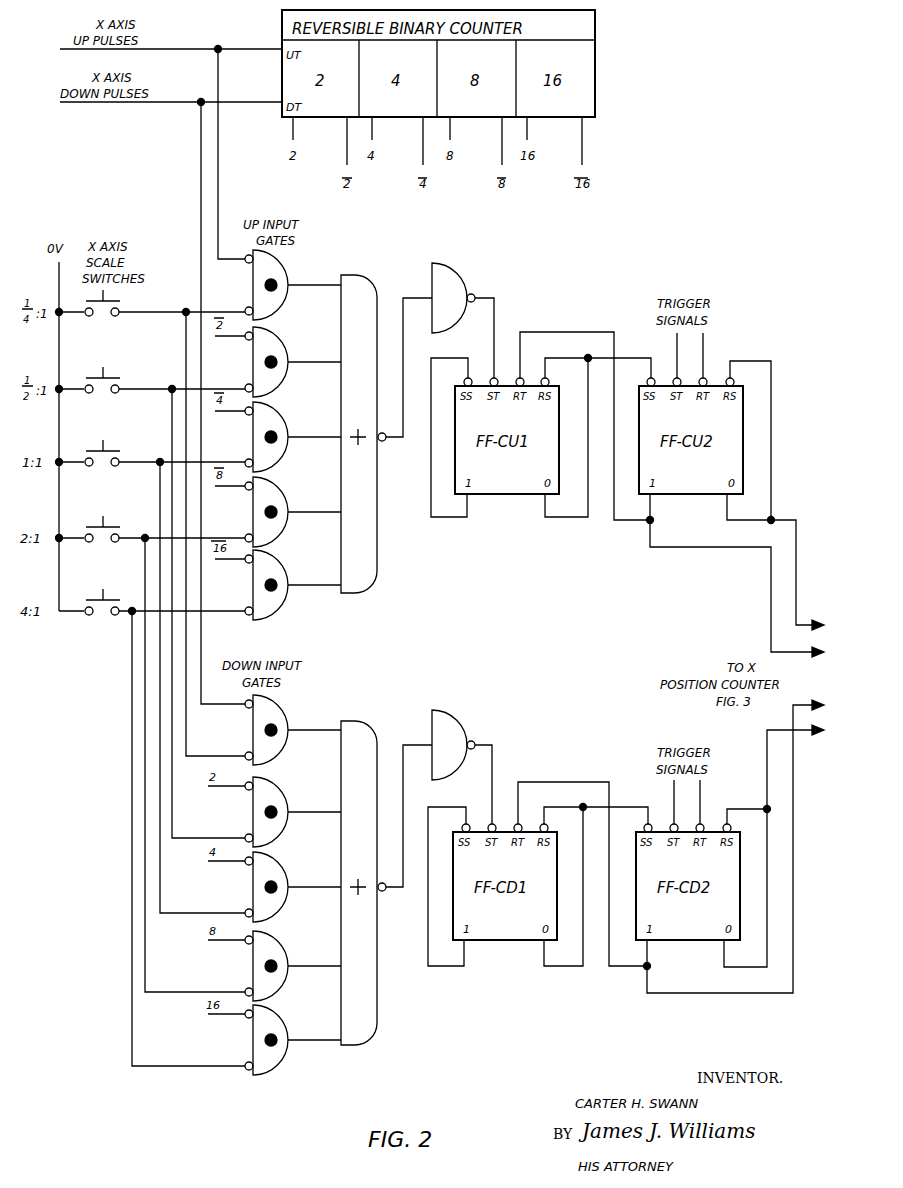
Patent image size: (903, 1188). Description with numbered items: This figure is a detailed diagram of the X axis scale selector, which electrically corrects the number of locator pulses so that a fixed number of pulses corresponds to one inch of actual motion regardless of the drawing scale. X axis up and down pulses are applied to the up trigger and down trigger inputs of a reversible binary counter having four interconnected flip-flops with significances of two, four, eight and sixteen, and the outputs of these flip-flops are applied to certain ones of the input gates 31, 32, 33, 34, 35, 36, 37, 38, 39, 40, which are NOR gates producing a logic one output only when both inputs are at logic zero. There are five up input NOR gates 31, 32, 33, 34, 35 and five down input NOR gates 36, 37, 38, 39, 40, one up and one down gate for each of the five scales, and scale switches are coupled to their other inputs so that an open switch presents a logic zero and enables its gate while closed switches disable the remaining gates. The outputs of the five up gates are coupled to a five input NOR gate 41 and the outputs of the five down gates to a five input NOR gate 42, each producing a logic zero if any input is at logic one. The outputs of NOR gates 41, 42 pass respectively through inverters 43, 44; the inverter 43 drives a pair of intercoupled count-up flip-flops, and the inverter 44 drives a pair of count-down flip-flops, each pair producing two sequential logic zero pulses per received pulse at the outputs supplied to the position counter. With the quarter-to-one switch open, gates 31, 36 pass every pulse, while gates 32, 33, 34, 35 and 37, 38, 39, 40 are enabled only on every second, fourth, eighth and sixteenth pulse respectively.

The up input NOR gate 31 is at (289, 279).
The up input NOR gate 32 is at (289, 356).
The up input NOR gate 33 is at (289, 431).
The up input NOR gate 34 is at (289, 506).
The up input NOR gate 35 is at (289, 579).
The down input NOR gate 36 is at (289, 724).
The down input NOR gate 37 is at (289, 806).
The down input NOR gate 38 is at (289, 881).
The down input NOR gate 39 is at (289, 960).
The down input NOR gate 40 is at (289, 1034).
The five input NOR gate 41 is at (366, 280).
The five input NOR gate 42 is at (366, 726).
The inverter 43 is at (456, 270).
The inverter 44 is at (456, 717).